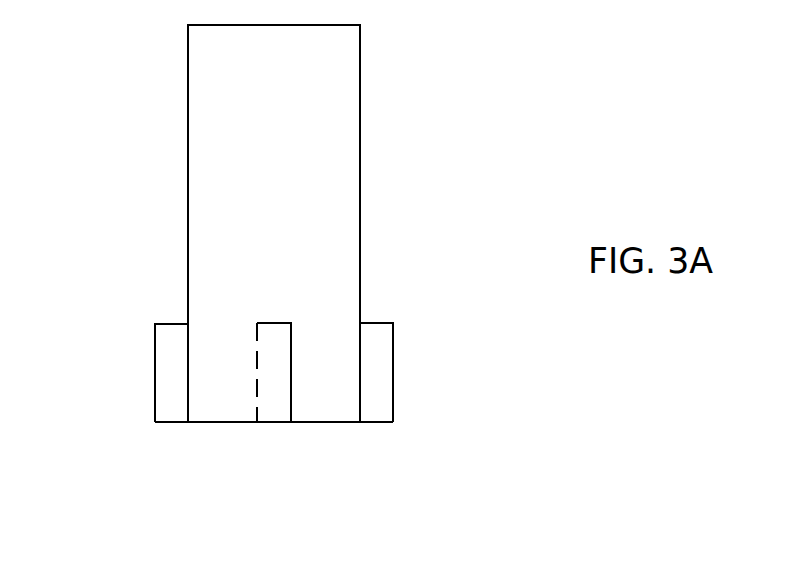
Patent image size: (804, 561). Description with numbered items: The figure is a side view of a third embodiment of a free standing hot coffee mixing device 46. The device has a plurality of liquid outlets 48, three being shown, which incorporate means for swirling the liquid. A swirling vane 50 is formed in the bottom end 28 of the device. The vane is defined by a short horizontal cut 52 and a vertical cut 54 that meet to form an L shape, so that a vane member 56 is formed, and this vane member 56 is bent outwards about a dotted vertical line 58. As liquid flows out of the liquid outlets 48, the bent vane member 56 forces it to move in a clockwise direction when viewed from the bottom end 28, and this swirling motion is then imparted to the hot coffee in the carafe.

The bottom end 28 is at (188, 183).
The hot coffee mixing device 46 is at (397, 217).
The liquid outlets 48 is at (167, 402).
The swirling vane 50 is at (267, 317).
The short horizontal cut 52 is at (280, 320).
The vertical cut 54 is at (290, 375).
The vane member 56 is at (393, 348).
The dotted vertical line 58 is at (257, 369).